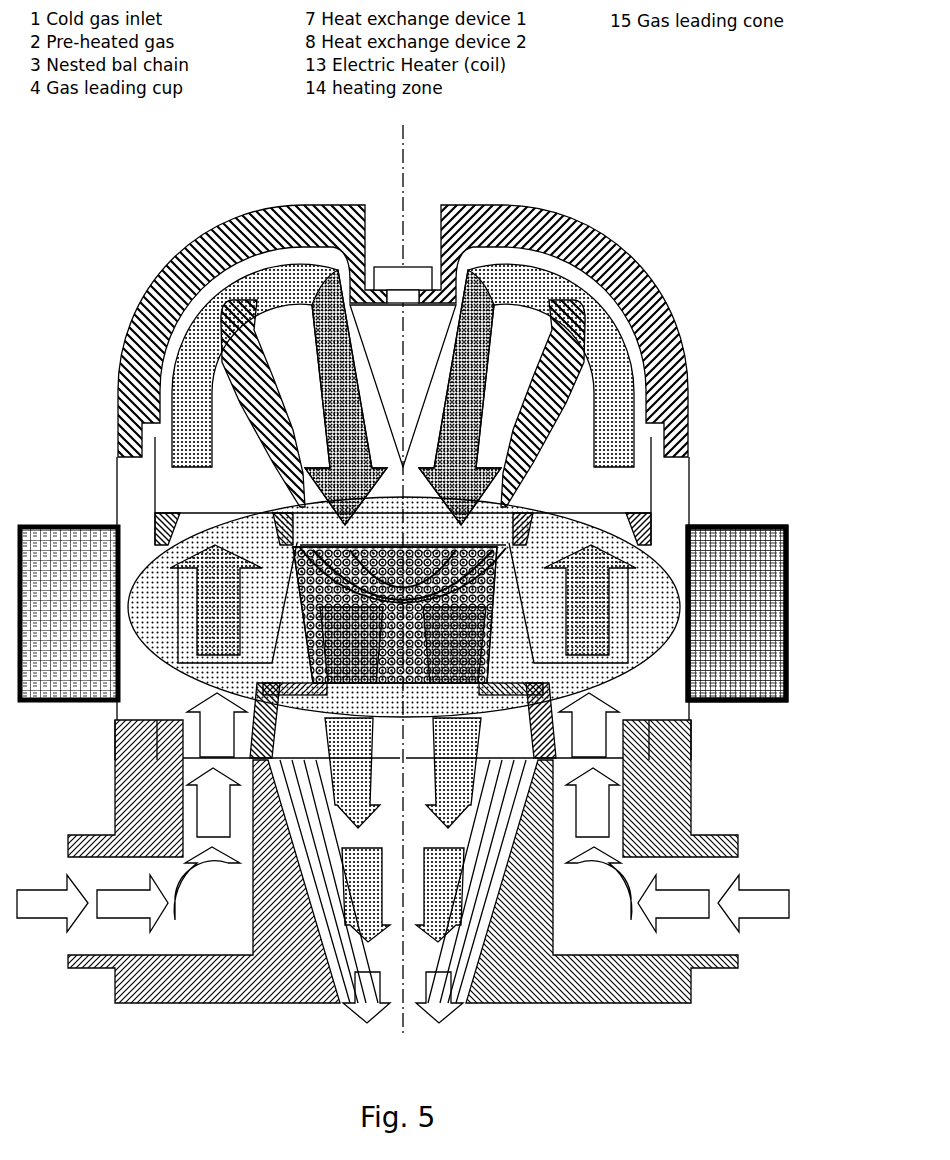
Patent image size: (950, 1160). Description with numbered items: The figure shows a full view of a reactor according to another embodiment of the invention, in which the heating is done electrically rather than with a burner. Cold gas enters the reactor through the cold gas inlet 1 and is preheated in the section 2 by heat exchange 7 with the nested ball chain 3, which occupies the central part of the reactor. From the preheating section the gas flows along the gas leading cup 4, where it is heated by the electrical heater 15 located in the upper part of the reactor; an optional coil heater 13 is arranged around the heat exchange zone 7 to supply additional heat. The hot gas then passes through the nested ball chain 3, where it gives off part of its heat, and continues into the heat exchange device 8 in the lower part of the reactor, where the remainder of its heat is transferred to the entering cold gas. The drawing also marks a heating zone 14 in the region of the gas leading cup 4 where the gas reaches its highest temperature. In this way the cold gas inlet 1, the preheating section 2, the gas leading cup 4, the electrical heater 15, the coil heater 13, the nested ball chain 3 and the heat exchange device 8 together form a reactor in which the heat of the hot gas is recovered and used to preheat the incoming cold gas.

The cold gas inlet 1 is at (115, 900).
The section 2 is at (207, 600).
The nested ball chain 3 is at (280, 545).
The gas leading cup 4 is at (244, 391).
The heat exchange 7 is at (247, 336).
The heat exchange device 8 is at (478, 887).
The coil heater 13 is at (745, 545).
The heating zone 14 is at (313, 505).
The electrical heater 15 is at (390, 343).